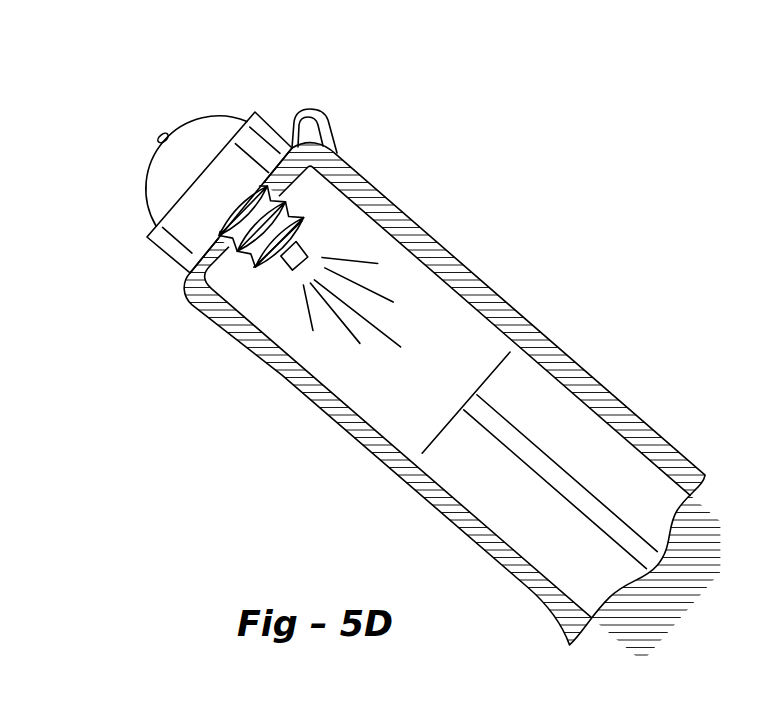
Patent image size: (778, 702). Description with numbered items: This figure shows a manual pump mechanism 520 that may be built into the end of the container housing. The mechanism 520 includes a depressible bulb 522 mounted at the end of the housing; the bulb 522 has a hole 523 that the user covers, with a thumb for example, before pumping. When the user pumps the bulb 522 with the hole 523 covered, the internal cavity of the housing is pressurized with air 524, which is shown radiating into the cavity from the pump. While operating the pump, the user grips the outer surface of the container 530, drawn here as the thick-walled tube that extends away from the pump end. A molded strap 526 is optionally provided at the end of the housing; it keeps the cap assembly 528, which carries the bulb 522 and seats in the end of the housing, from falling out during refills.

The manual pump mechanism 520 is at (578, 294).
The depressible bulb 522 is at (207, 120).
The hole 523 is at (163, 134).
The air 524 is at (355, 273).
The molded strap 526 is at (331, 127).
The cap assembly 528 is at (136, 270).
The outer surface of the container 530 is at (455, 273).